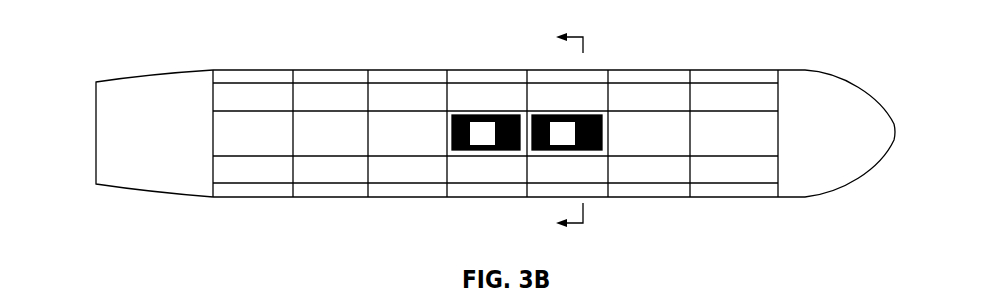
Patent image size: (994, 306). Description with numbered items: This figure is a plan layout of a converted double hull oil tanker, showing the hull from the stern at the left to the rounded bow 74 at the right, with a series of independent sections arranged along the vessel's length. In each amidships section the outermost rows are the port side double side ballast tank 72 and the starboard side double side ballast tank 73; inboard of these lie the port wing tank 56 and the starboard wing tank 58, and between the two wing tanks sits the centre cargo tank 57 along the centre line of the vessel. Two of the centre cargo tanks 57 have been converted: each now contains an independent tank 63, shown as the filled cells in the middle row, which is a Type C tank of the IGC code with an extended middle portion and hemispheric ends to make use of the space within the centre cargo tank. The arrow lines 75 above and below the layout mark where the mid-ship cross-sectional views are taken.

The port side wing tank 56 is at (495, 96).
The centre cargo tank 57 is at (495, 129).
The starboard side wing tank 58 is at (495, 169).
The independent tank 63 is at (527, 132).
The port side double side ballast tank 72 is at (495, 71).
The starboard side double side ballast tank 73 is at (495, 197).
The aircraft fuselage nose 74 is at (890, 113).
The arrow lines 75 is at (580, 128).